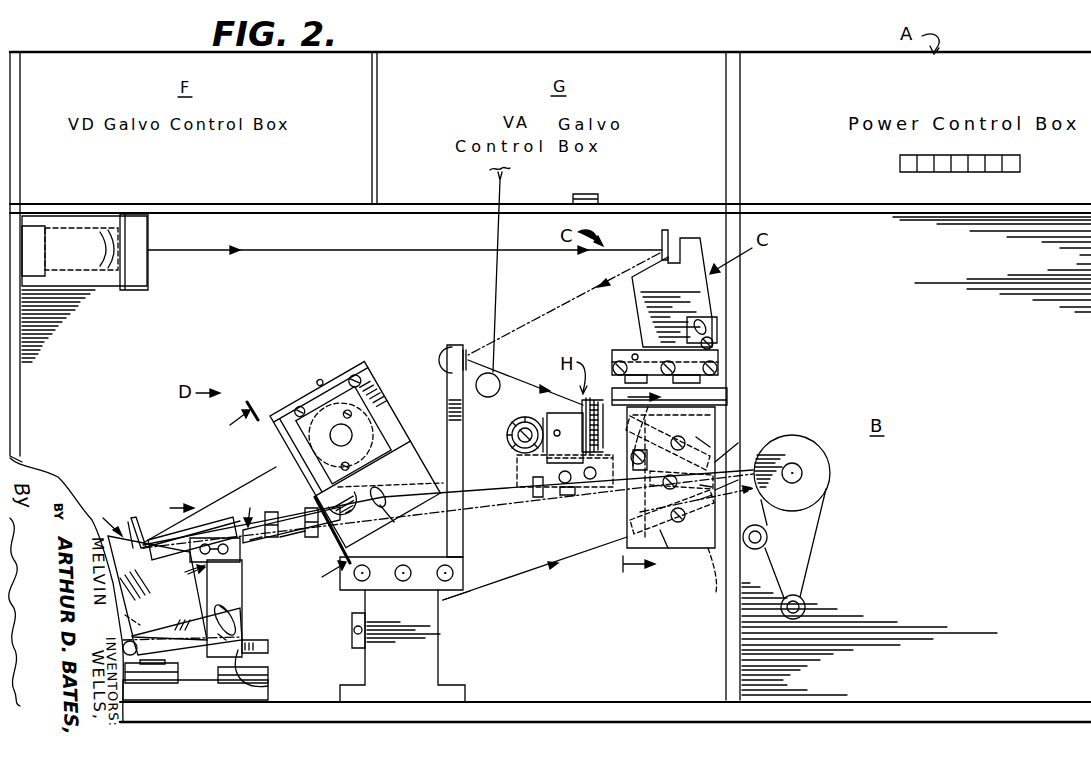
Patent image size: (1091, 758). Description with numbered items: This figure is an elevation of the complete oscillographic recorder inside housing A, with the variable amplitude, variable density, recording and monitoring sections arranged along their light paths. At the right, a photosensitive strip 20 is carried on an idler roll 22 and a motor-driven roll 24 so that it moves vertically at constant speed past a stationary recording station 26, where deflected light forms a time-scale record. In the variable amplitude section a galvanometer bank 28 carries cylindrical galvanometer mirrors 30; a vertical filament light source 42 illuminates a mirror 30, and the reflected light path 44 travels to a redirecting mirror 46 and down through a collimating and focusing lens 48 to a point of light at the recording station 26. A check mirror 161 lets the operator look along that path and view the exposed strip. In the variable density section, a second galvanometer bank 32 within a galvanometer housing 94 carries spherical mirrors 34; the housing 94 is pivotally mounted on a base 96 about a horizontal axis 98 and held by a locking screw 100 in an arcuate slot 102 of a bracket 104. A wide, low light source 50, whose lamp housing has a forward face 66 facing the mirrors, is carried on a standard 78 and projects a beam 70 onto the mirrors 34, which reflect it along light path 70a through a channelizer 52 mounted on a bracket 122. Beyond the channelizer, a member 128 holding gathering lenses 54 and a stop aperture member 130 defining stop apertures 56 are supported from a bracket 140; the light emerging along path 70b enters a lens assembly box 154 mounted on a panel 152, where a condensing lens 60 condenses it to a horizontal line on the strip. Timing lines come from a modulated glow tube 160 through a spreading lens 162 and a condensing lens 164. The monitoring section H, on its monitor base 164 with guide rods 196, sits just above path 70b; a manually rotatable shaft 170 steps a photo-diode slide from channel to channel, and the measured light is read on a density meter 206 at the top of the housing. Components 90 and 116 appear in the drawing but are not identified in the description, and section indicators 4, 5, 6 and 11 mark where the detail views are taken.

The photosensitive strip 20 is at (805, 570).
The idler roll 22 is at (818, 477).
The driven roll 24 is at (760, 550).
The recording station 26 is at (762, 448).
The galvanometer bank 28 is at (670, 236).
The galvanometer mirrors 30 is at (652, 248).
The galvanometer bank unit 32 is at (144, 509).
The galvanometer mirrors 34 is at (134, 518).
The vertical filament light source 42 is at (80, 318).
The light path 44 is at (454, 250).
The redirecting mirror 46 is at (464, 352).
The collimating and focusing lens 48 is at (700, 426).
The light source 50 is at (297, 437).
The channelizer 52 is at (212, 535).
The gathering lenses 54 is at (300, 540).
The stop apertures 56 is at (292, 570).
The condensing lens 60 is at (753, 470).
The forward face 66 is at (328, 440).
The light beam 70 is at (220, 505).
The light path 70a is at (260, 540).
The light beam 70b is at (516, 500).
The standard 78 is at (432, 673).
The mirror 90 is at (384, 492).
The galvanometer housing 94 is at (157, 588).
The base 96 is at (185, 650).
The horizontal axis 98 is at (195, 690).
The locking screw 100 is at (240, 624).
The arcuate slot 102 is at (268, 673).
The bracket 104 is at (248, 636).
The post 116 is at (274, 512).
The bracket 122 is at (212, 572).
The gathering lens member 128 is at (236, 535).
The stop aperture member 130 is at (355, 514).
The bracket 140 is at (224, 608).
The panel 152 is at (733, 328).
The lens assembly box 154 is at (616, 540).
The modulated glow tube 160 is at (352, 641).
The check mirror 161 is at (496, 380).
The spreading lens 162 is at (665, 540).
The monitor base 164 is at (600, 490).
The manually rotatable shaft 170 is at (520, 440).
The guide rods 196 is at (560, 485).
The density meter 206 is at (598, 198).
The section line 4- 4 is at (281, 497).
The section line 5- 5 is at (174, 513).
The section line 6- 6 is at (178, 547).
The section line 11- 11 is at (653, 489).